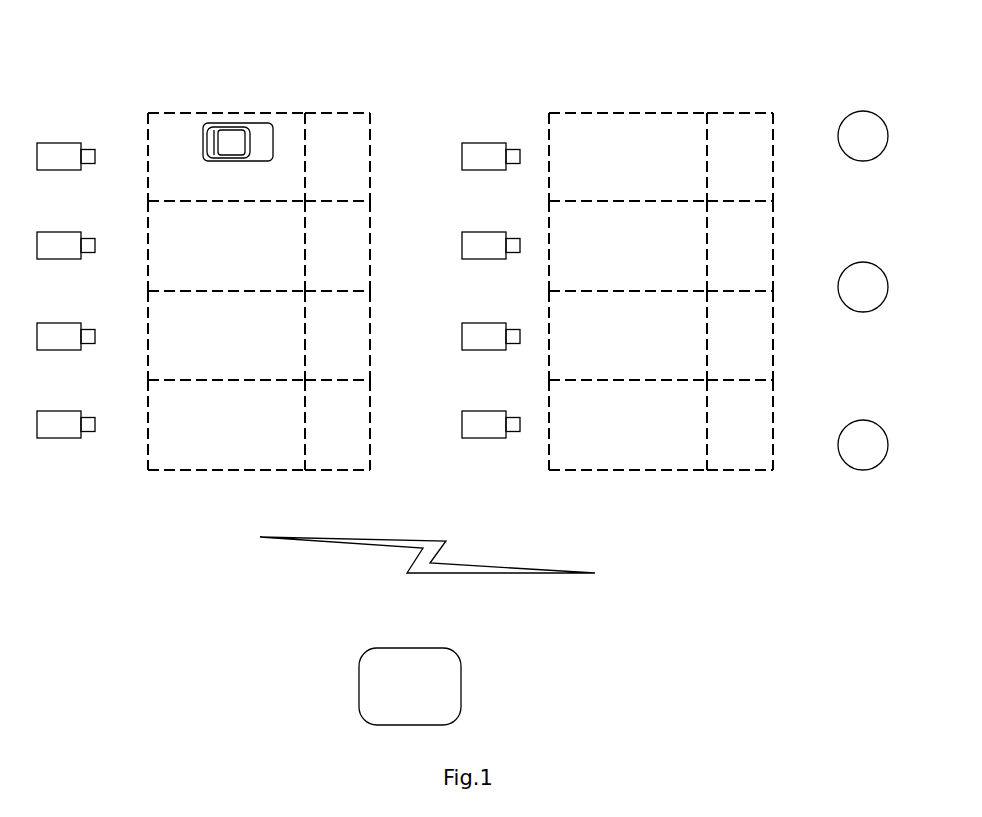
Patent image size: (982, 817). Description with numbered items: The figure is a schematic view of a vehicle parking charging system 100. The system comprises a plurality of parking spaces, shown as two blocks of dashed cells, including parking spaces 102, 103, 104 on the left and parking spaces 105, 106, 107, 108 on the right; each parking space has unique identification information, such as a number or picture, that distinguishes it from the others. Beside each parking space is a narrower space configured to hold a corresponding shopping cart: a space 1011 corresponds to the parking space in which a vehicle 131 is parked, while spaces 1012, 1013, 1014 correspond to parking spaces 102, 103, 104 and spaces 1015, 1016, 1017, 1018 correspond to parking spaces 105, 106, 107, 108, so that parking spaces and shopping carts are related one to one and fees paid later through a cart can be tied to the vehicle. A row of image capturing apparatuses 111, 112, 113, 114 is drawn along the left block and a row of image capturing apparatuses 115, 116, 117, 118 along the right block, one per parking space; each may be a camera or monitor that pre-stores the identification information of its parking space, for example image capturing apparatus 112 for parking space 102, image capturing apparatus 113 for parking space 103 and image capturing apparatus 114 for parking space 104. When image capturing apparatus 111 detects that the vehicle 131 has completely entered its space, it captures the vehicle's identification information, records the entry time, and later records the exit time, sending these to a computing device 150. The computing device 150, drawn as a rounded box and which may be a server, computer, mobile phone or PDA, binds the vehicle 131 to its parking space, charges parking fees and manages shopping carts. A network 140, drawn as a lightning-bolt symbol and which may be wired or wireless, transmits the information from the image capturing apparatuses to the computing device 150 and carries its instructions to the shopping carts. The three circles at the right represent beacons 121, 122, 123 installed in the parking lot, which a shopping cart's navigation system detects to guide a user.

The vehicle parking charging system 100 is at (193, 90).
The parking space 102 is at (226, 246).
The parking space 103 is at (226, 335).
The parking space 104 is at (226, 425).
The parking space 105 is at (628, 157).
The parking space 106 is at (628, 246).
The parking space 107 is at (628, 335).
The parking space 108 is at (628, 425).
The space 1011 is at (337, 157).
The space 1012 is at (337, 246).
The space 1013 is at (337, 335).
The space 1014 is at (337, 425).
The space 1015 is at (740, 157).
The space 1016 is at (740, 246).
The space 1017 is at (740, 335).
The space 1018 is at (740, 425).
The image capturing apparatus 111 is at (68, 162).
The image capturing apparatus 112 is at (68, 251).
The image capturing apparatus 113 is at (68, 342).
The image capturing apparatus 114 is at (68, 430).
The image capturing apparatus 115 is at (493, 162).
The image capturing apparatus 116 is at (493, 251).
The image capturing apparatus 117 is at (493, 342).
The image capturing apparatus 118 is at (493, 430).
The beacon 121 is at (863, 136).
The beacon 122 is at (863, 287).
The beacon 123 is at (863, 445).
The vehicle 131 is at (238, 157).
The network 140 is at (427, 570).
The computing device 150 is at (410, 686).